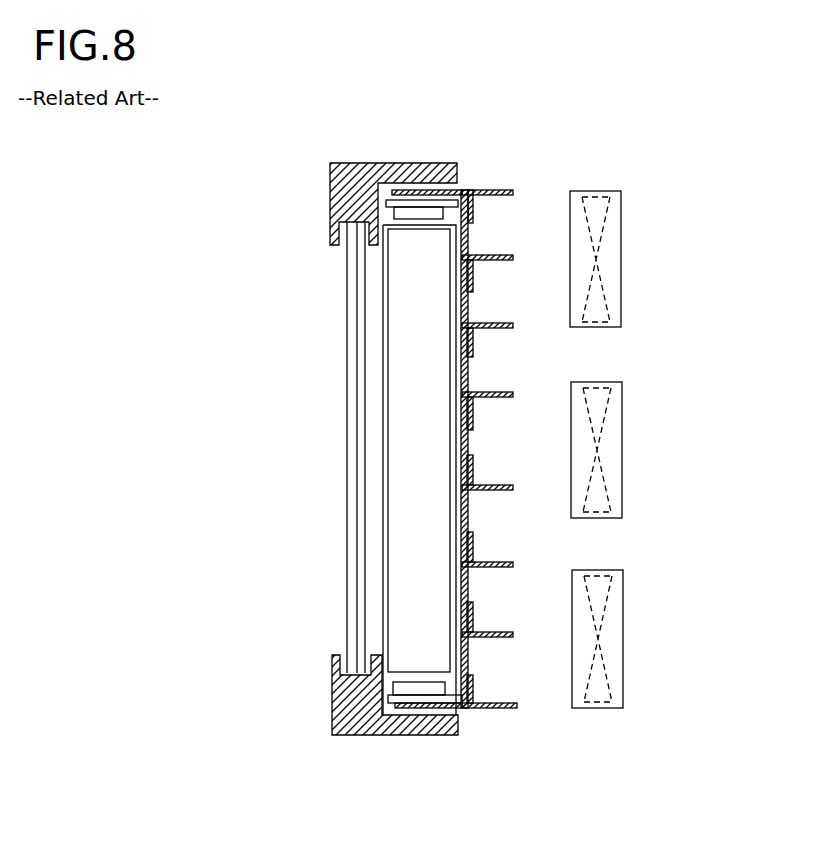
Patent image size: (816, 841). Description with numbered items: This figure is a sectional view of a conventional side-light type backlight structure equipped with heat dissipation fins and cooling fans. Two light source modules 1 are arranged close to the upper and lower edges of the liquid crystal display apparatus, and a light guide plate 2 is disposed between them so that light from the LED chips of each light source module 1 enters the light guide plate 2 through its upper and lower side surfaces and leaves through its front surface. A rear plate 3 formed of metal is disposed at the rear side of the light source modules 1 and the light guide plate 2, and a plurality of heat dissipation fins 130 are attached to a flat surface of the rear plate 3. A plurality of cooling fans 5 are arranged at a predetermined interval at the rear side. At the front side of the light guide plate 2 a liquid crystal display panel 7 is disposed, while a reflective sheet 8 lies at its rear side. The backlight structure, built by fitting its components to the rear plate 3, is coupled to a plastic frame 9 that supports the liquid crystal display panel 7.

The light source module 1 is at (405, 215).
The light guide plate 2 is at (412, 493).
The rear plate 3 is at (447, 183).
The cooling fan 5 is at (623, 257).
The liquid crystal display panel 7 is at (352, 383).
The reflective sheet 8 is at (457, 443).
The plastic frame 9 is at (354, 197).
The heat dissipation fin 130 is at (507, 190).